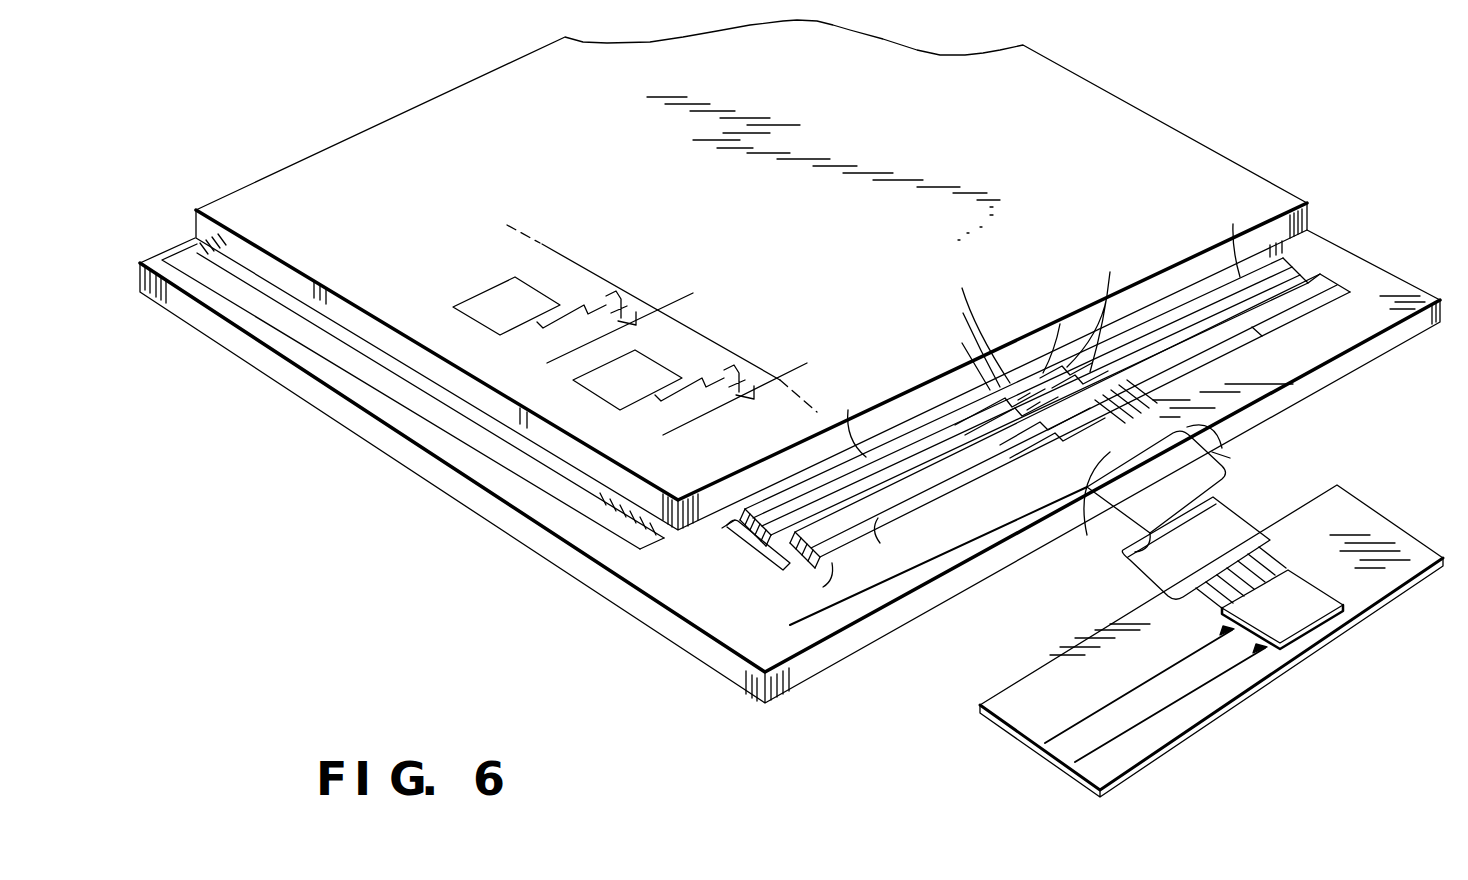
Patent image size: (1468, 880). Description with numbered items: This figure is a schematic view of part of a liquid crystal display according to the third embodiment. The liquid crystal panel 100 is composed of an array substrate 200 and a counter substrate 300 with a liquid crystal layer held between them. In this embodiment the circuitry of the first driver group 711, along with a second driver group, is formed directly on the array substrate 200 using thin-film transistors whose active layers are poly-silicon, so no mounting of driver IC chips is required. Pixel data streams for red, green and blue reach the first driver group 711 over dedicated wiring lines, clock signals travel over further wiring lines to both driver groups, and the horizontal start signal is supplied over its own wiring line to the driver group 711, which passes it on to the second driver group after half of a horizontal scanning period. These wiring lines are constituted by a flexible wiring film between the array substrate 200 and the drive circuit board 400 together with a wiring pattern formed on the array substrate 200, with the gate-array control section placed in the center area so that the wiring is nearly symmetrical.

The liquid crystal panel 100 is at (791, 361).
The array substrate 200 is at (790, 448).
The counter substrate 300 is at (1284, 198).
The drive circuit board 400 is at (1373, 505).
The first driver group 711 is at (724, 530).